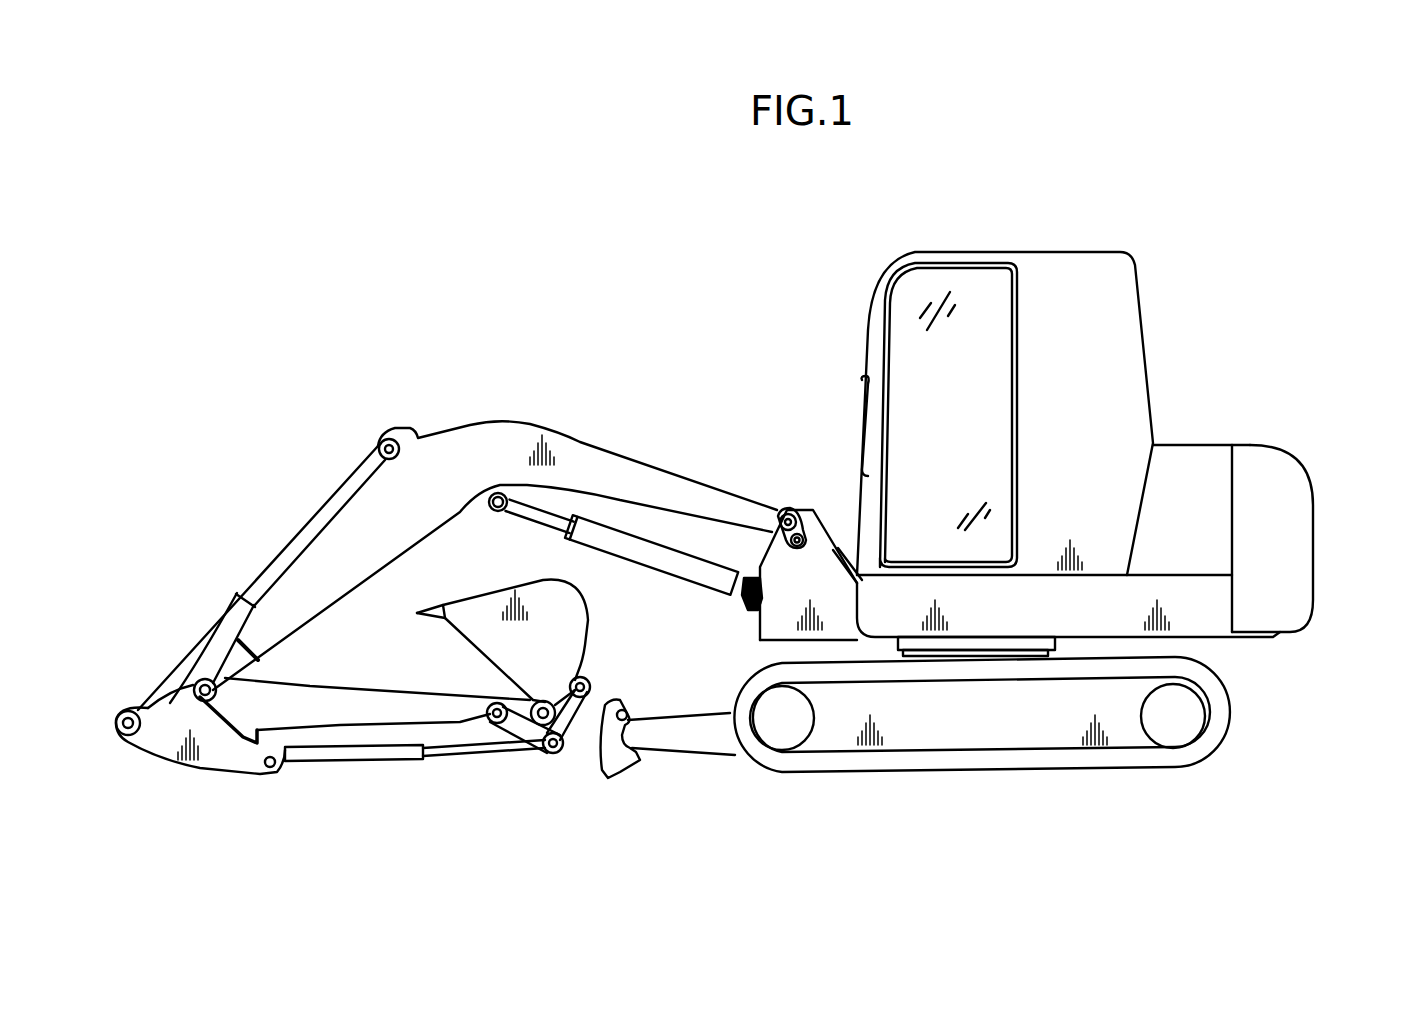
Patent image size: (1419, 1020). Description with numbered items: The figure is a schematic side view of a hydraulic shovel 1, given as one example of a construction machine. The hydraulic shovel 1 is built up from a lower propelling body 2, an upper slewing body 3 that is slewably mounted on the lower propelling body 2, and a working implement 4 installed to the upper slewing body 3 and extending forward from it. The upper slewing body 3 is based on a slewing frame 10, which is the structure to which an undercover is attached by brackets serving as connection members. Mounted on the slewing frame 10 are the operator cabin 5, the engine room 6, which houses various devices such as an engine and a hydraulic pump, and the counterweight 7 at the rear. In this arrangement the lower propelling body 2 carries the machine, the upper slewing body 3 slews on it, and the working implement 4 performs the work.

The hydraulic shovel 1 is at (1131, 205).
The lower propelling body 2 is at (1197, 716).
The upper slewing body 3 is at (1305, 446).
The working implement 4 is at (640, 480).
The operator cabin 5 is at (936, 263).
The engine room 6 is at (1197, 515).
The counterweight 7 is at (1287, 585).
The slewing frame 10 is at (1197, 630).